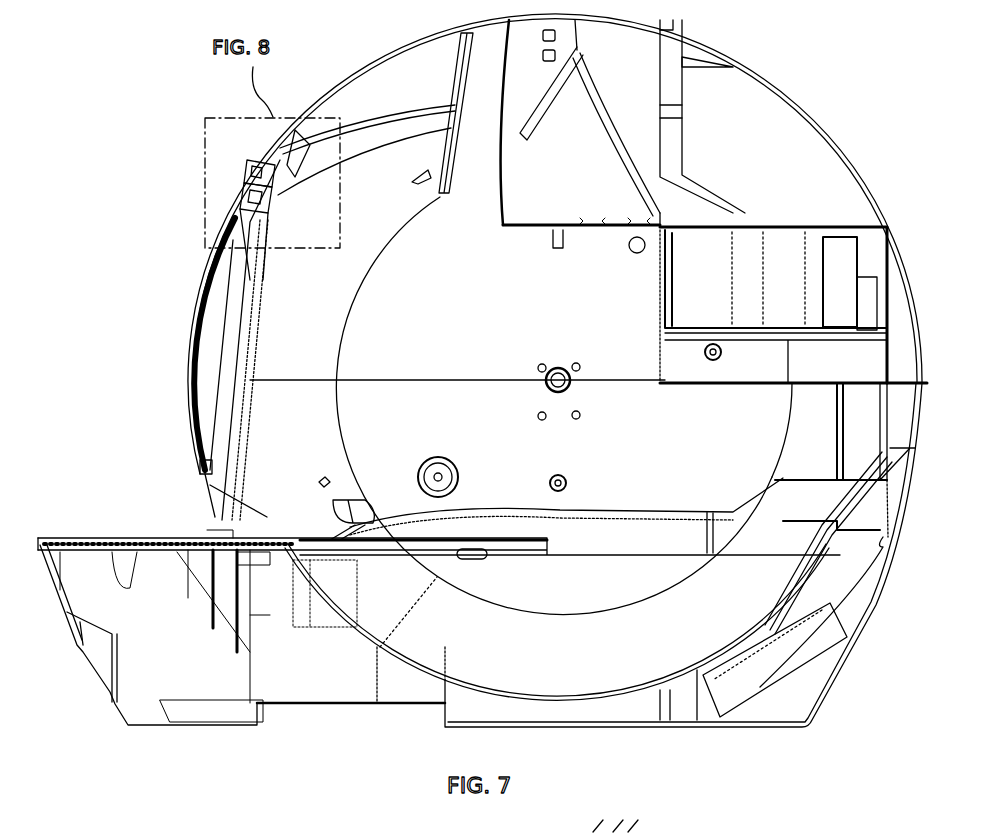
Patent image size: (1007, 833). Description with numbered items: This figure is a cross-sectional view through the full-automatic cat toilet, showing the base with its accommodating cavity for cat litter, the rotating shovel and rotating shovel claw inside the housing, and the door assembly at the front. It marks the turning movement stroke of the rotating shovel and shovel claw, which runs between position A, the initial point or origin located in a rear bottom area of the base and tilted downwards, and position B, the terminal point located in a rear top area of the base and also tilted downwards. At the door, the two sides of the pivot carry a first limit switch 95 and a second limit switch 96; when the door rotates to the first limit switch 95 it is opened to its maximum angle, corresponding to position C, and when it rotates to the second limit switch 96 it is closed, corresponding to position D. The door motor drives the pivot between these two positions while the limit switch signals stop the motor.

The position A is at (720, 346).
The position B is at (662, 227).
The position C is at (565, 487).
The position D is at (193, 318).
The first limit switch 95 is at (245, 170).
The second limit switch 96 is at (242, 200).